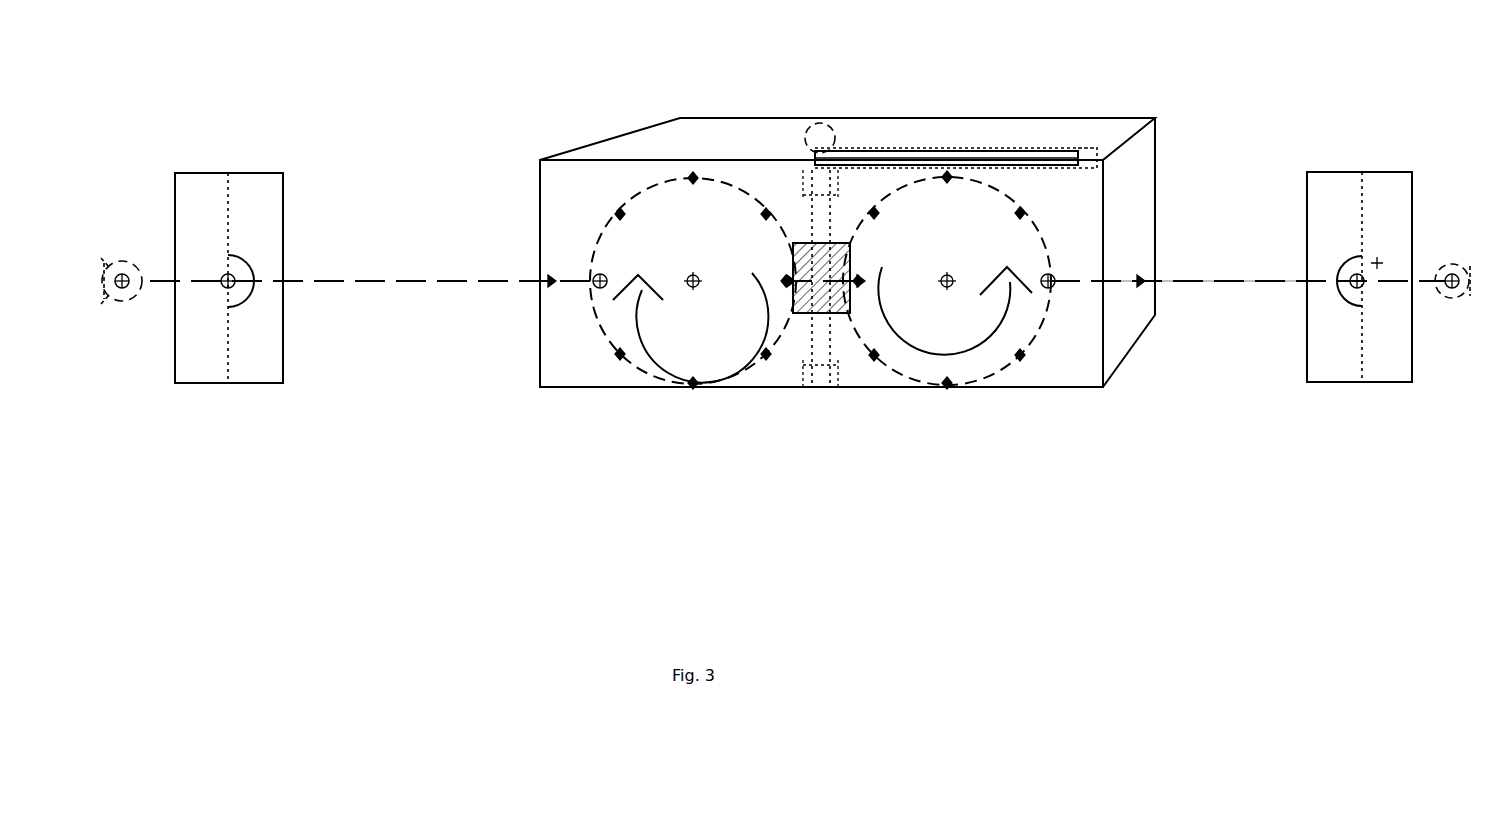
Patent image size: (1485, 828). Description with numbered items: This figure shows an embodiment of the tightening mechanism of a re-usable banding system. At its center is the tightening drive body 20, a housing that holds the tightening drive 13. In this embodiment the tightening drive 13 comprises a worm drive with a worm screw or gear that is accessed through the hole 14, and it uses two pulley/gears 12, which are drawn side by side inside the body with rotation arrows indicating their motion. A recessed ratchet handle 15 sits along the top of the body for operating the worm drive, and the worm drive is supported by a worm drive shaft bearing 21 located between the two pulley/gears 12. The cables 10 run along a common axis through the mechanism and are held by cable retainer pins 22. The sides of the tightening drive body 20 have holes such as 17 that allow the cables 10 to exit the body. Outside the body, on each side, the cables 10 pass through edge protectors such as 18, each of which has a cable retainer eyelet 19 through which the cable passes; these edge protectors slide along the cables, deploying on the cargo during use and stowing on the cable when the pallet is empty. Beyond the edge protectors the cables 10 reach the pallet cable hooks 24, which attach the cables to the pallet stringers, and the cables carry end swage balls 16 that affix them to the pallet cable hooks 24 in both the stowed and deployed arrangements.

The cable 10 is at (366, 277).
The pulley/gear 12 is at (665, 200).
The tightening drive 13 is at (812, 243).
The hole 14 is at (843, 130).
The recessed ratchet handle 15 is at (1020, 149).
The end swage ball 16 is at (1448, 266).
The hole 17 is at (1137, 278).
The edge protector 18 is at (1368, 384).
The cable retainer eyelet 19 is at (1337, 295).
The tightening drive body 20 is at (935, 390).
The worm drive shaft bearing 21 is at (826, 388).
The cable retainer pin 22 is at (695, 388).
The pallet cable hook 24 is at (128, 308).